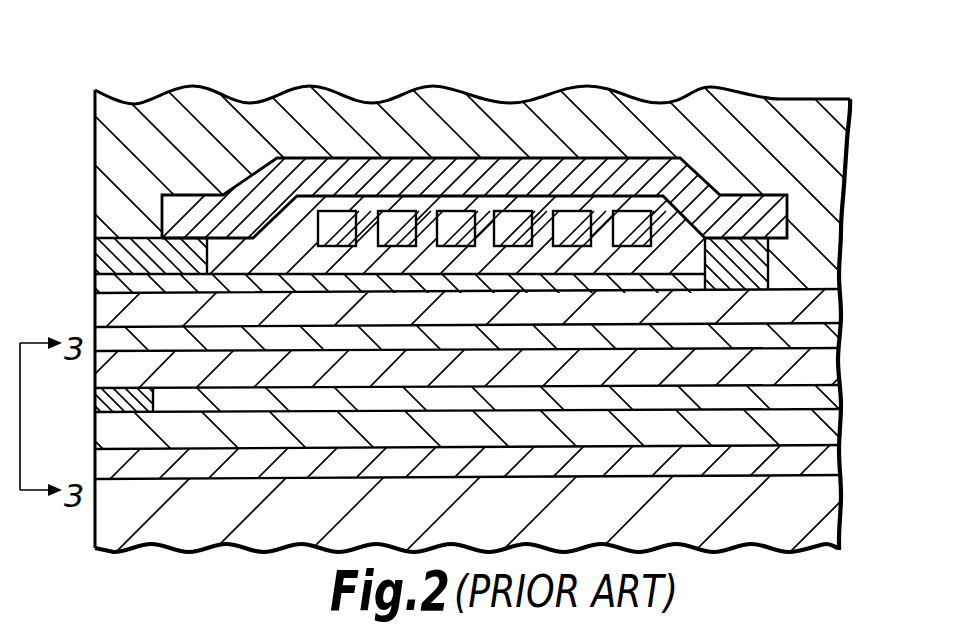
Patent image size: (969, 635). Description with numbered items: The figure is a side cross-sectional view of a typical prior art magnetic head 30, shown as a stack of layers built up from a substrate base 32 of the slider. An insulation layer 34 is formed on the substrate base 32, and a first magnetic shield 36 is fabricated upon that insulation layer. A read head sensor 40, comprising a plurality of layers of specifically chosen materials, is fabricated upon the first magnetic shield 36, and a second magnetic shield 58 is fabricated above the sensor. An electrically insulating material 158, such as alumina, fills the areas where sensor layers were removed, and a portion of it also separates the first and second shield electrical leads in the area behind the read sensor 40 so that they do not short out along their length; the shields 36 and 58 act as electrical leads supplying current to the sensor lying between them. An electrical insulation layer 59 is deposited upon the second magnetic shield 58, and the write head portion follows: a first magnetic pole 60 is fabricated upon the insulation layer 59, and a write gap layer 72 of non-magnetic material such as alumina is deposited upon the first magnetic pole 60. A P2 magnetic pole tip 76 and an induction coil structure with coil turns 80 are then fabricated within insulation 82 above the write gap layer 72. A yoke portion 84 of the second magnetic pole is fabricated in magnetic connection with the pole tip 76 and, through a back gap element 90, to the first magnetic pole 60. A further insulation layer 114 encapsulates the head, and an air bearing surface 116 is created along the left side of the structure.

The prior art magnetic head 30 is at (178, 77).
The insulation layer 114 is at (268, 118).
The air bearing surface 116 is at (100, 176).
The yoke portion of the second magnetic pole 84 is at (380, 160).
The insulation 82 is at (486, 203).
The coil turns 80 is at (634, 213).
The P2 magnetic pole tip 76 is at (100, 256).
The write gap layer 72 is at (108, 285).
The back gap element 90 is at (760, 256).
The first magnetic pole 60 is at (825, 309).
The electrical insulation layer 59 is at (830, 340).
The second magnetic shield 58 is at (822, 373).
The electrically insulating material 158 is at (822, 400).
The read head sensor 40 is at (100, 408).
The first magnetic shield 36 is at (110, 433).
The insulation layer 34 is at (822, 463).
The substrate base 32 is at (822, 522).